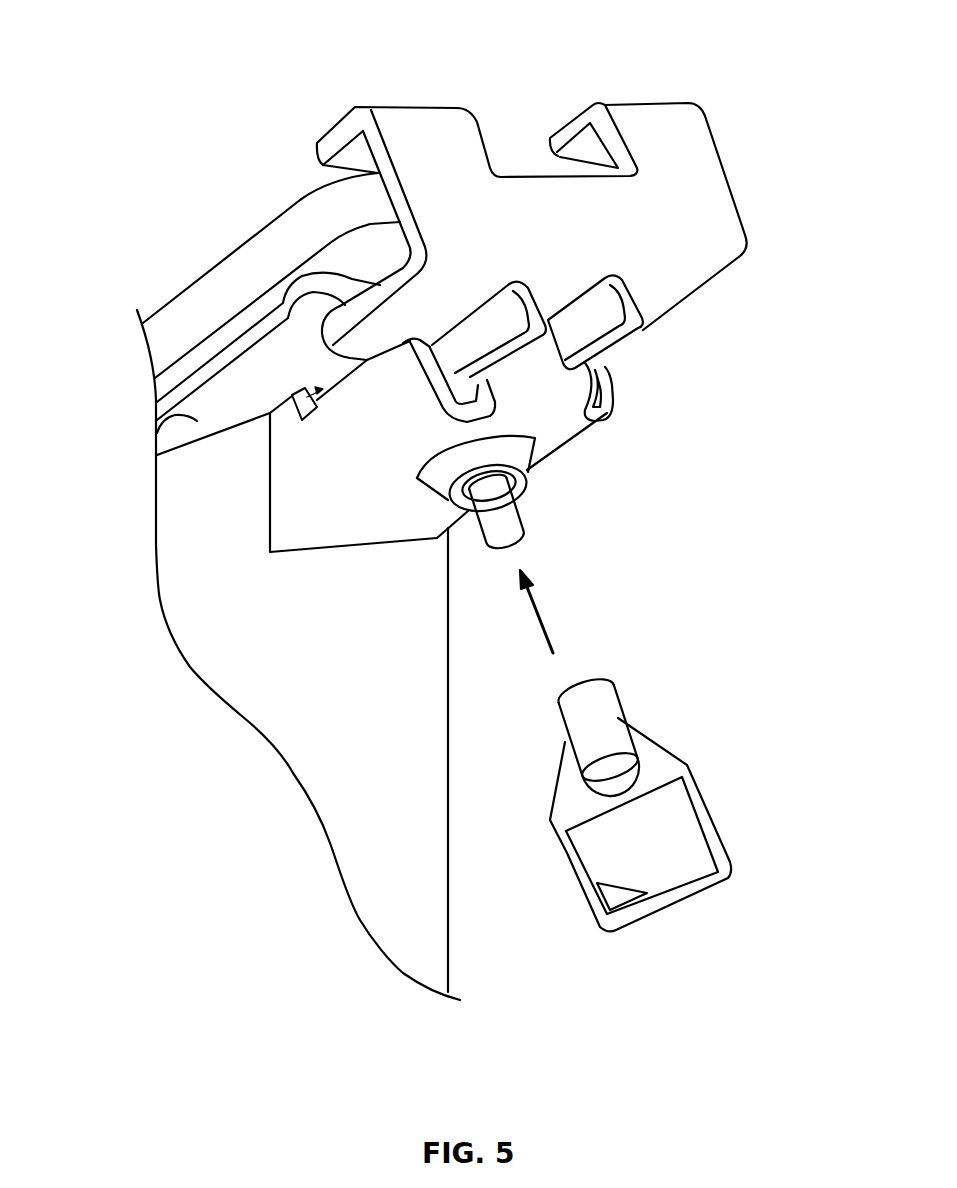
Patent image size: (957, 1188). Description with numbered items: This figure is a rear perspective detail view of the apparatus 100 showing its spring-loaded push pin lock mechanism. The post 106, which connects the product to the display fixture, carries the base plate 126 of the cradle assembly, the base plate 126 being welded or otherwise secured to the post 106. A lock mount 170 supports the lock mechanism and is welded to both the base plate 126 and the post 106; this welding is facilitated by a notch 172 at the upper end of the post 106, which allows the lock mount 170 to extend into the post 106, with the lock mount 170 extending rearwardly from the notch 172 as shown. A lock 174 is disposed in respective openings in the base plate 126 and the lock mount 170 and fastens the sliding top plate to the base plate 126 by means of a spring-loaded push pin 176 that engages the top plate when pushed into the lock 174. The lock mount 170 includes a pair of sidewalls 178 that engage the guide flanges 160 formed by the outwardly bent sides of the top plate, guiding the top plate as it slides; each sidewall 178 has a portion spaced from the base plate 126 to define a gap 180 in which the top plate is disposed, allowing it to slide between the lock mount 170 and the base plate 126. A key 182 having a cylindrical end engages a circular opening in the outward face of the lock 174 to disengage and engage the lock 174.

The apparatus 100 is at (770, 68).
The post 106 is at (423, 737).
The base plate 126 is at (157, 432).
The guide flanges 160 is at (510, 303).
The lock mount 170 is at (563, 430).
The notch 172 is at (297, 517).
The lock 174 is at (531, 503).
The spring-loaded push pin 176 is at (530, 537).
The sidewalls 178 is at (430, 378).
The gap 180 is at (287, 396).
The key 182 is at (657, 767).